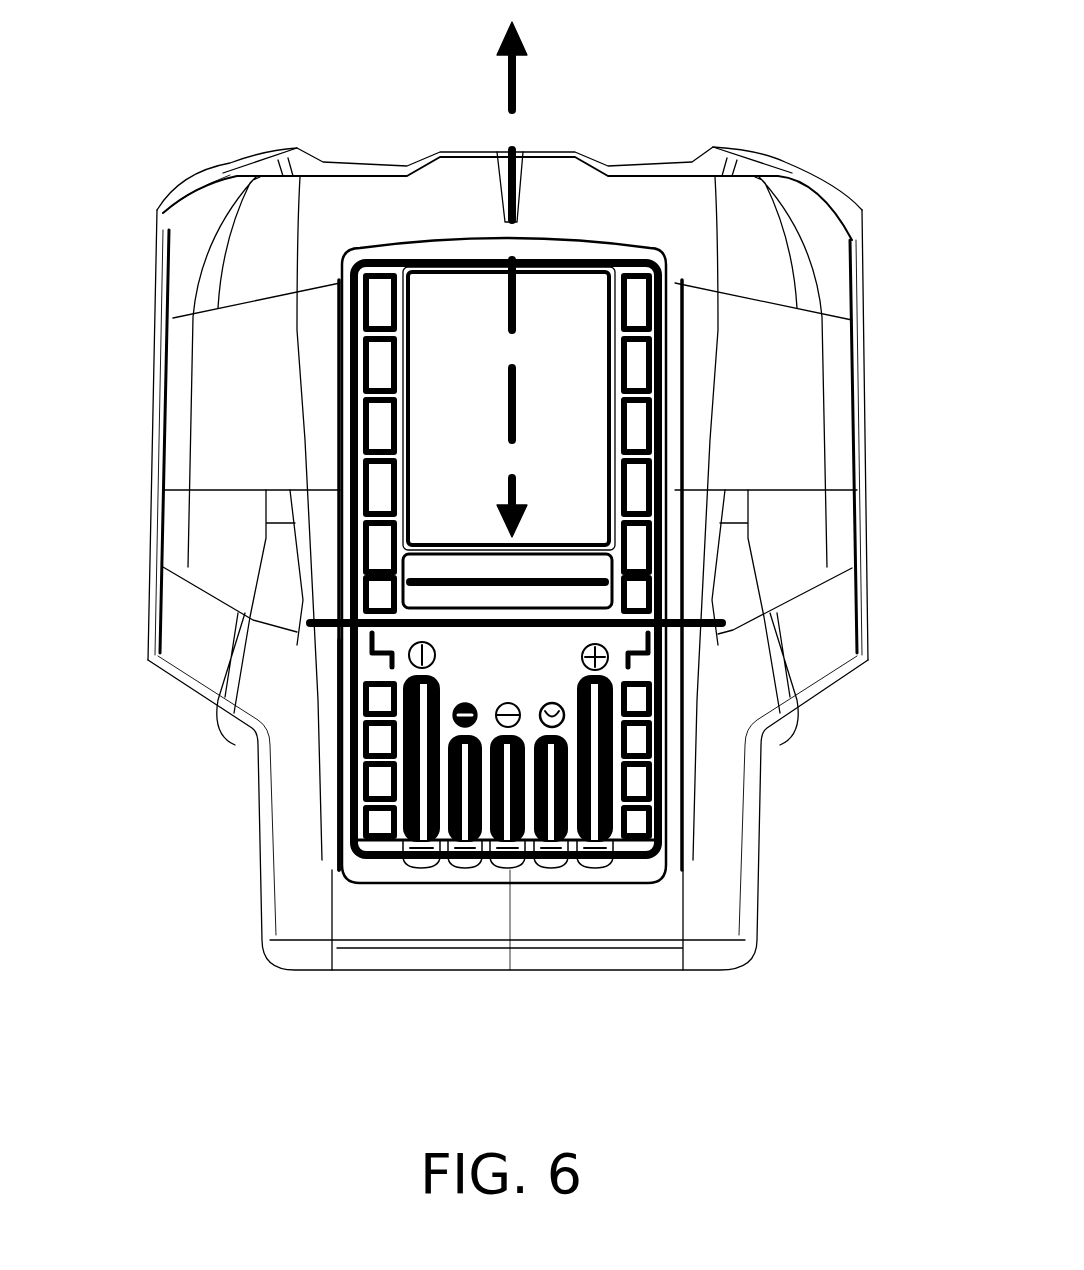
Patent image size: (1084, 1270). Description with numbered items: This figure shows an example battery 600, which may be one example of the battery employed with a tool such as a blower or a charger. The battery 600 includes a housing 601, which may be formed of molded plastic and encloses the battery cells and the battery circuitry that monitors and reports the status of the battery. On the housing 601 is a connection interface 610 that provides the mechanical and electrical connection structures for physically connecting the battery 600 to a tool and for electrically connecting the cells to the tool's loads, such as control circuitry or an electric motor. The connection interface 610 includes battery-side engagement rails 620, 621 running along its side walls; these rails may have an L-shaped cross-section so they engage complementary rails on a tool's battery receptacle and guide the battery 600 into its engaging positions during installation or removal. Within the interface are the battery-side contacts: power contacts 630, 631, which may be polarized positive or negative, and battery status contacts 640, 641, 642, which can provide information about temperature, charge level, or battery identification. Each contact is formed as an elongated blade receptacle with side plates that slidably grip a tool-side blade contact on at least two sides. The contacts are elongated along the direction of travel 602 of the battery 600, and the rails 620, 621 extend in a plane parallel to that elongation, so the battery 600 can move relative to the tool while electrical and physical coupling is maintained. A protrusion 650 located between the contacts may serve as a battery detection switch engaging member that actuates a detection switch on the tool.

The battery 600 is at (721, 90).
The housing 601 is at (800, 235).
The direction of travel 602 is at (517, 82).
The connection interface 610 is at (481, 669).
The battery-side engagement rail 620 is at (685, 677).
The battery-side engagement rail 621 is at (335, 680).
The power contact 630 is at (420, 833).
The power contact 631 is at (602, 832).
The battery status contact 640 is at (462, 845).
The battery status contact 641 is at (517, 838).
The battery status contact 642 is at (553, 838).
The protrusion 650 is at (488, 865).